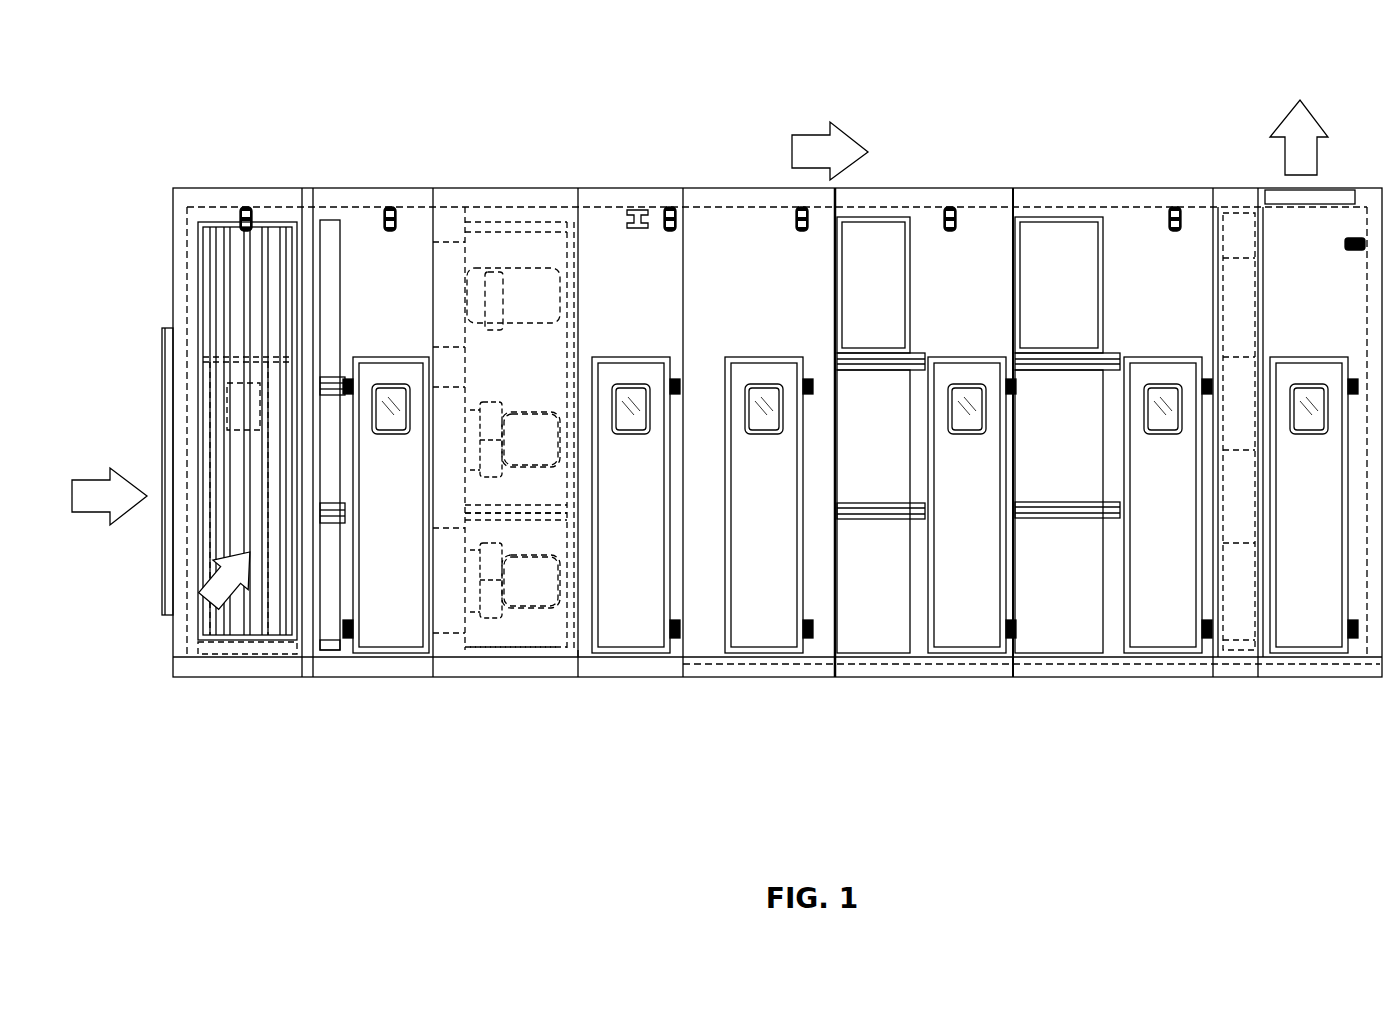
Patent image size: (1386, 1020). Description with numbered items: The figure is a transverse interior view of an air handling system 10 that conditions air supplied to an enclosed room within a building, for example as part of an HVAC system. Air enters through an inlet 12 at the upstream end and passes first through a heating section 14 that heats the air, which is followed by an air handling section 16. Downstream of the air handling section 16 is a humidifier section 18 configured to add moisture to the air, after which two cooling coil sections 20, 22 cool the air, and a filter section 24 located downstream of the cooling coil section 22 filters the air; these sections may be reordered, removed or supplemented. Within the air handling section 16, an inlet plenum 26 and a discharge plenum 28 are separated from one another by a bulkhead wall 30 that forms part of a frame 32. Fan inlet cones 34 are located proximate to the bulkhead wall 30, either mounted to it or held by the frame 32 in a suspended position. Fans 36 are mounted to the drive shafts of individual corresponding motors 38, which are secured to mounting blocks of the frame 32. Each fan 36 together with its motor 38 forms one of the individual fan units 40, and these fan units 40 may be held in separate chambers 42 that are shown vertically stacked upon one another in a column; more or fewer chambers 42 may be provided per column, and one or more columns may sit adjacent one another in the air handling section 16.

The air handling system 10 is at (258, 128).
The inlet 12 is at (148, 405).
The heating section 14 is at (433, 174).
The air handling section 16 is at (433, 168).
The humidifier section 18 is at (835, 80).
The cooling coil section 20 is at (1013, 76).
The cooling coil section 22 is at (1013, 76).
The filter section 24 is at (1382, 80).
The inlet plenum 26 is at (472, 731).
The discharge plenum 28 is at (683, 731).
The bulkhead wall 30 is at (493, 650).
The frame 32 is at (577, 650).
The fan inlet cones 34 is at (480, 580).
The fans 36 is at (480, 466).
The motors 38 is at (548, 443).
The fan units 40 is at (545, 480).
The chambers 42 is at (553, 540).